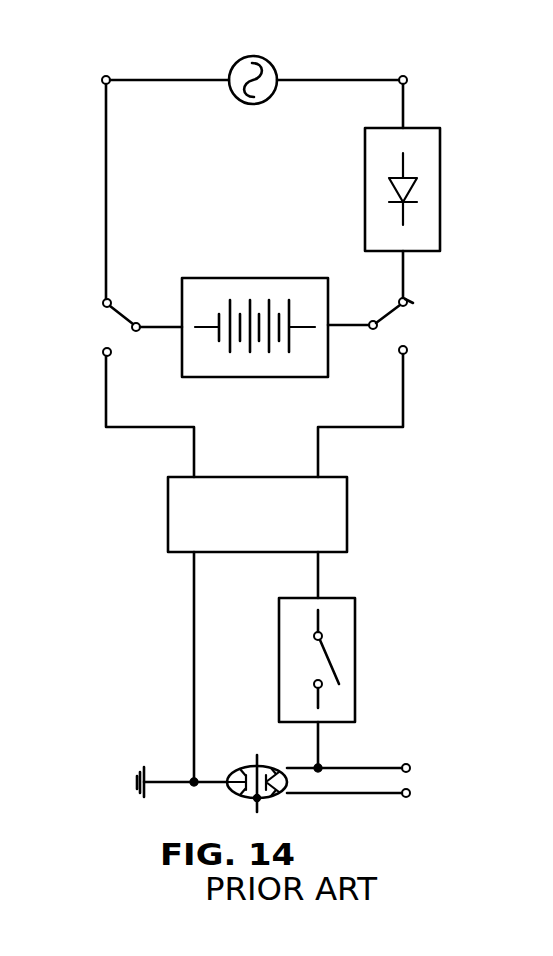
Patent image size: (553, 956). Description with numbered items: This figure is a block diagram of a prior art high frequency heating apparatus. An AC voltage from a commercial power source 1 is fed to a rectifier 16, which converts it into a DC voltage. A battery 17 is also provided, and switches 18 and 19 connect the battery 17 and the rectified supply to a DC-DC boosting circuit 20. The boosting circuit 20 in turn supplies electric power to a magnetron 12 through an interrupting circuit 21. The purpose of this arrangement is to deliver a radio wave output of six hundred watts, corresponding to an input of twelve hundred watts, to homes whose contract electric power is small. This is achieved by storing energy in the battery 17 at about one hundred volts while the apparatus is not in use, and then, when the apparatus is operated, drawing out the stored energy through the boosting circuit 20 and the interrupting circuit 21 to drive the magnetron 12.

The commercial power source 1 is at (254, 105).
The magnetron 12 is at (231, 767).
The rectifier 16 is at (440, 192).
The battery 17 is at (252, 278).
The switch 18 is at (400, 330).
The switch 19 is at (113, 327).
The DC-DC boosting circuit 20 is at (168, 511).
The interrupting circuit 21 is at (279, 637).